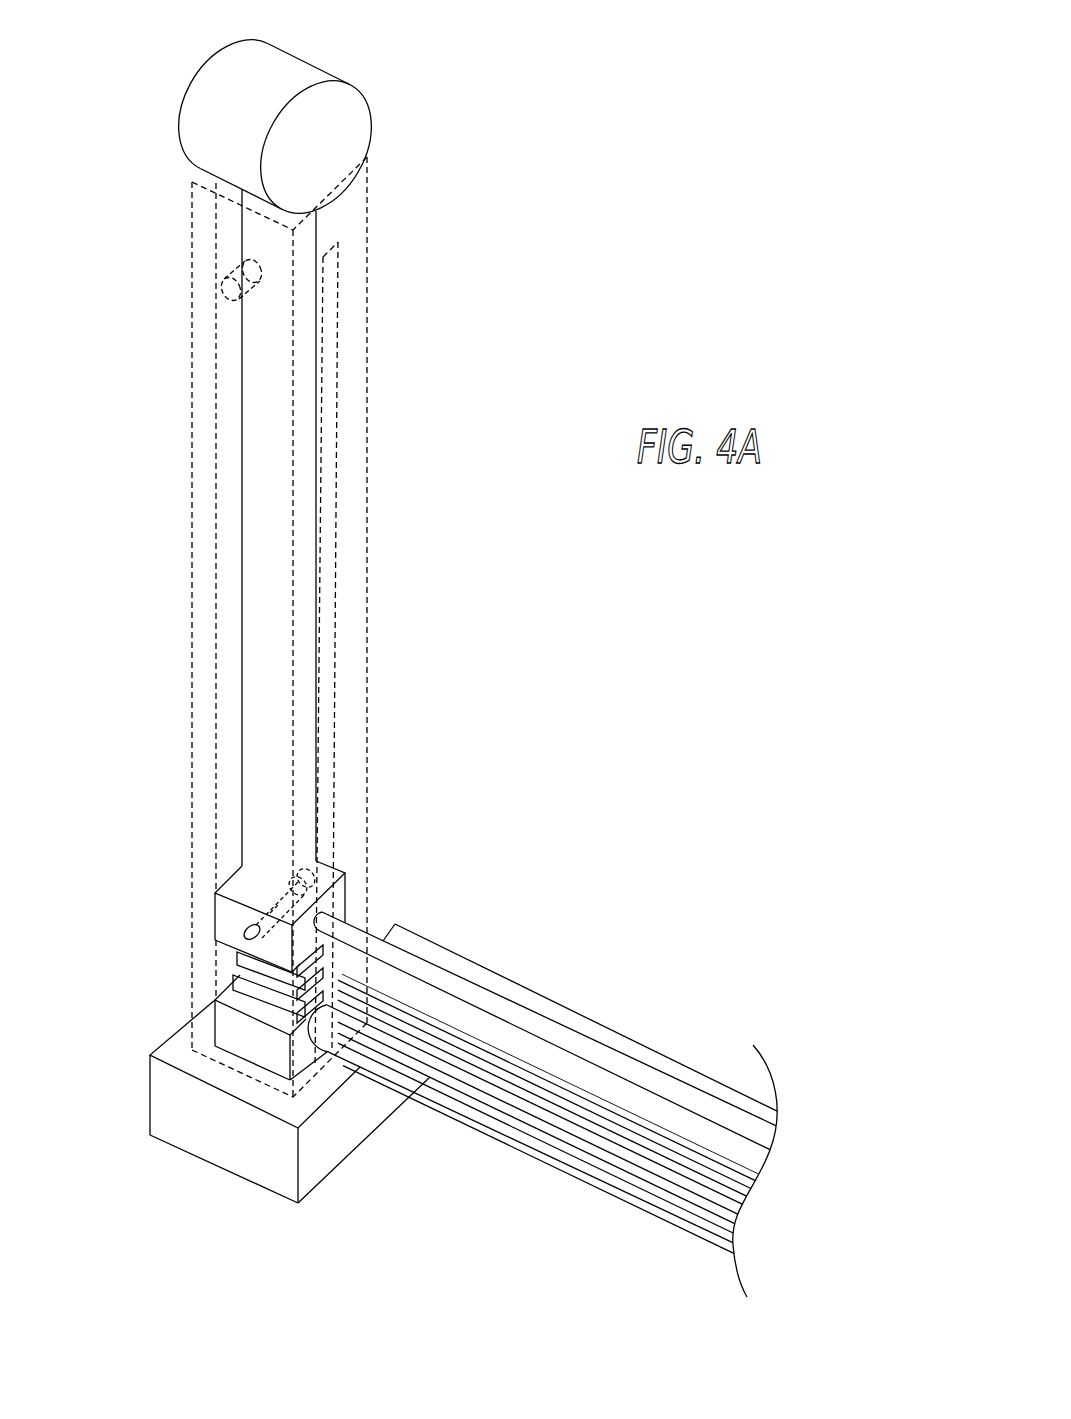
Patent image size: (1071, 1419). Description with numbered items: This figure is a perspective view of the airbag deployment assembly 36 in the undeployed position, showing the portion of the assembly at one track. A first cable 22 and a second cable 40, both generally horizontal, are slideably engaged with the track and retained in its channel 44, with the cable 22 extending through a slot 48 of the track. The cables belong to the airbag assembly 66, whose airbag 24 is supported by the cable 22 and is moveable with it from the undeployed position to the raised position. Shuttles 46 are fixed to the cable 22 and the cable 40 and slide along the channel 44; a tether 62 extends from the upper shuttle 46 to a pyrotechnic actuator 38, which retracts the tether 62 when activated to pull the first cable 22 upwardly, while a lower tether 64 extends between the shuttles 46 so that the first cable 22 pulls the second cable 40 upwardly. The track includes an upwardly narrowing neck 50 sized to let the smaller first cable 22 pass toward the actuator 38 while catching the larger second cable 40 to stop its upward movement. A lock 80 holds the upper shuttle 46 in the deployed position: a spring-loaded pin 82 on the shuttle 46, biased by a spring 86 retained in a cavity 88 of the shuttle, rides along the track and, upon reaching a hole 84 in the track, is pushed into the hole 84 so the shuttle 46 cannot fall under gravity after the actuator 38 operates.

The first cable 22 is at (447, 968).
The airbag 24 is at (535, 988).
The airbag deployment assembly 36 is at (184, 241).
The pyrotechnic actuator 38 is at (178, 122).
The second cable 40 is at (330, 1053).
The channel 44 is at (216, 398).
The shuttle 46 is at (214, 900).
The slot 48 is at (337, 367).
The neck 50 is at (330, 914).
The tether 62 is at (306, 513).
The lower tether 64 is at (233, 975).
The airbag assembly 66 is at (625, 1021).
The lock 80 is at (231, 930).
The spring-loaded pin 82 is at (252, 933).
The hole 84 is at (218, 303).
The spring 86 is at (300, 882).
The cavity 88 is at (280, 905).